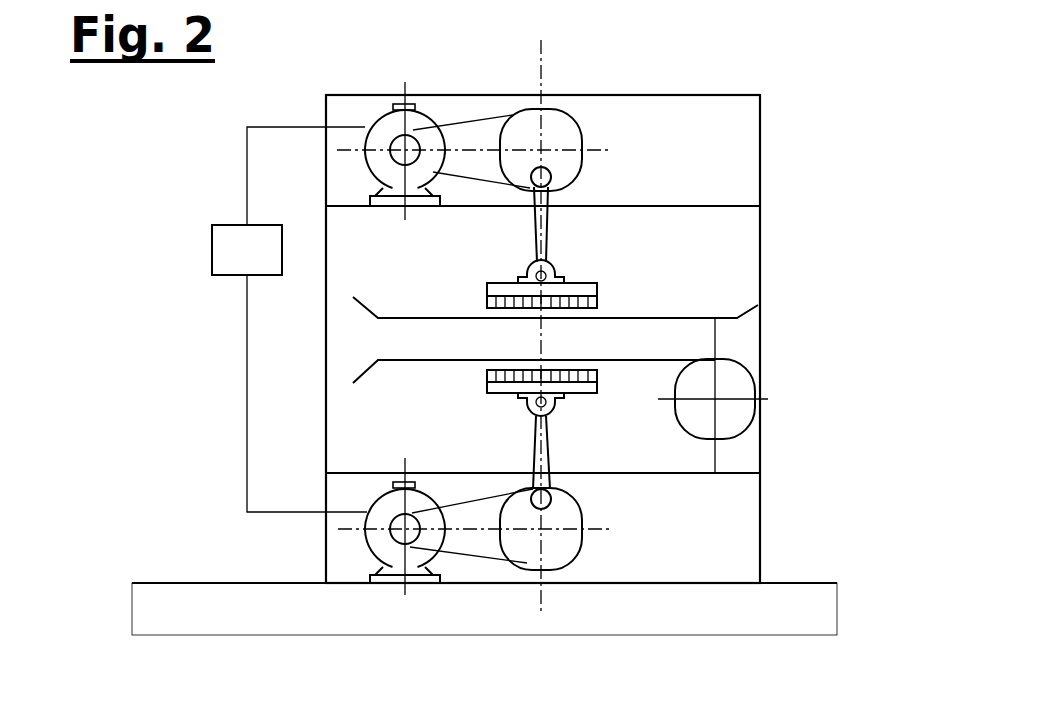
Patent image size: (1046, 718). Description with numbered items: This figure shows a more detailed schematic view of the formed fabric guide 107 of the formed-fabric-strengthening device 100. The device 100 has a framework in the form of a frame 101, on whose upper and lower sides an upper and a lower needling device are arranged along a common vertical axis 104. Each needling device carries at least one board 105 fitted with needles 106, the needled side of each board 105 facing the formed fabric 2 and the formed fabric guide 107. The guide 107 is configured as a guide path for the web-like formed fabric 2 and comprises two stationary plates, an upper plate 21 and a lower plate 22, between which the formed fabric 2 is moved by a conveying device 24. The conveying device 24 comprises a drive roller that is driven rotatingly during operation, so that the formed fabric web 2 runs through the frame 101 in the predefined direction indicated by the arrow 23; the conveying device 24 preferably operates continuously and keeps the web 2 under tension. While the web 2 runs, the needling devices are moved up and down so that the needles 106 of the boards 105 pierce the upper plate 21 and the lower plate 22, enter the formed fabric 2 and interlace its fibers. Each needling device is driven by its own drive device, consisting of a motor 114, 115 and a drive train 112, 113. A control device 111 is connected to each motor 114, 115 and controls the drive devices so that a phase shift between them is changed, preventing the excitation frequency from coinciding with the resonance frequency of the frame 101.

The formed-fabric-strengthening device 100 is at (778, 150).
The frame 101 is at (655, 113).
The vertical axis 104 is at (543, 90).
The needle board 105 is at (487, 287).
The needles 106 is at (487, 297).
The formed fabric guide 107 is at (742, 312).
The control device 111 is at (289, 319).
The drive train 112 is at (513, 114).
The drive train 113 is at (492, 568).
The motor 114 is at (422, 122).
The motor 115 is at (413, 558).
The formed fabric 2 is at (464, 333).
The upper plate 21 is at (665, 317).
The lower plate 22 is at (643, 360).
The direction of run 23 is at (603, 337).
The conveying device 24 is at (730, 385).